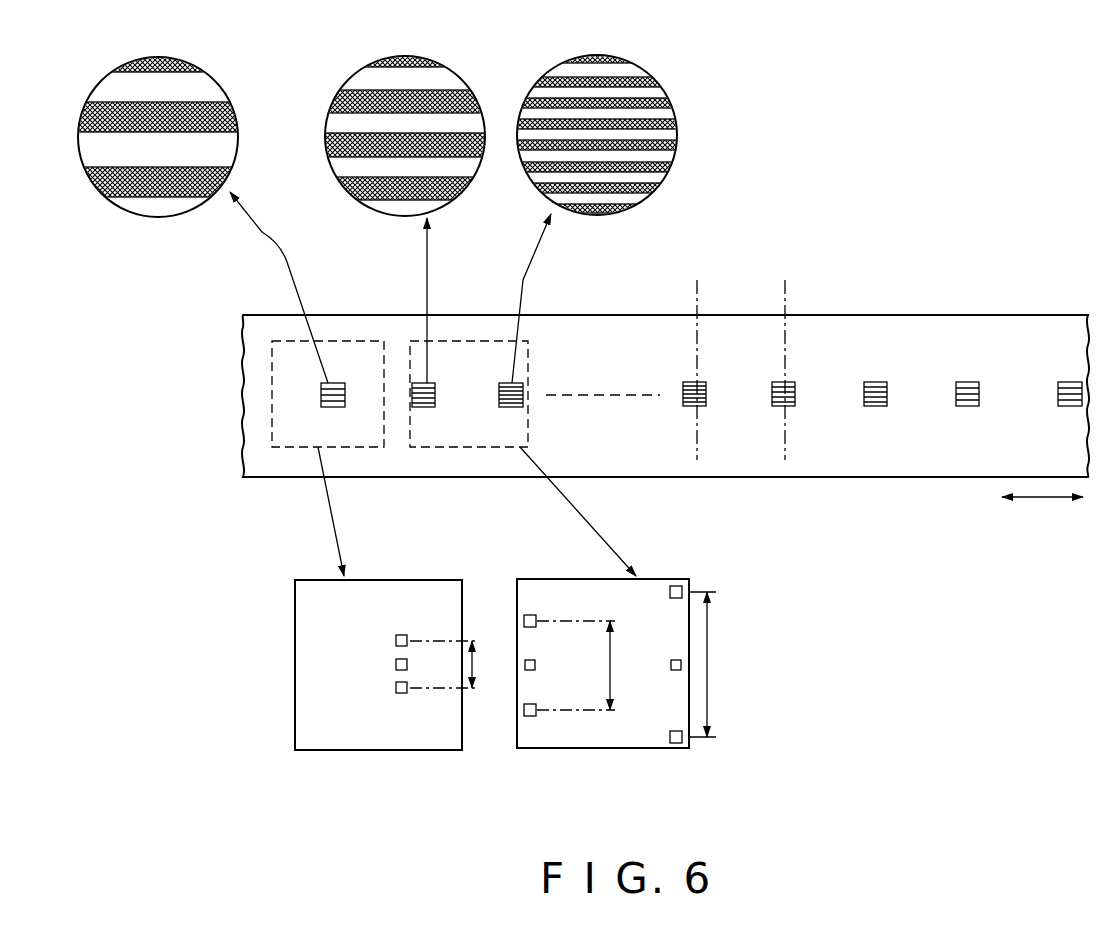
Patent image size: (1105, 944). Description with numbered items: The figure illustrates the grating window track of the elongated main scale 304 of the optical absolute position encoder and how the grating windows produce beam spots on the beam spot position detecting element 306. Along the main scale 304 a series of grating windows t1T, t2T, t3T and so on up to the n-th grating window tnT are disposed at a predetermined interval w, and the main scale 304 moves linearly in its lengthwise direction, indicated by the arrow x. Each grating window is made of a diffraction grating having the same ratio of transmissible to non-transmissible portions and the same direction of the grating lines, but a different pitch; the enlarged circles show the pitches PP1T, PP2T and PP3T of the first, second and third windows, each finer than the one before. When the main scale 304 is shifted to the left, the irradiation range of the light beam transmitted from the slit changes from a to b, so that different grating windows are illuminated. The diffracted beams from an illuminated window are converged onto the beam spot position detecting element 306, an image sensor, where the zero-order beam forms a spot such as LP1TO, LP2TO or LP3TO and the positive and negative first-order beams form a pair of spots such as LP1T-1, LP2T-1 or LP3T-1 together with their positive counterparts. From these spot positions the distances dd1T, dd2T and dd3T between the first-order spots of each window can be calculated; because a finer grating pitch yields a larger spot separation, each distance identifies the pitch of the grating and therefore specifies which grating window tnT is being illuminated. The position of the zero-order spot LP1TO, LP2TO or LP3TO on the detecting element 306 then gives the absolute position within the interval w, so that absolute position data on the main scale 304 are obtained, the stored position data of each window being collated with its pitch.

The main scale 304 is at (955, 305).
The beam spot position detecting element 306 is at (302, 750).
The irradiation range of the light beam a is at (365, 338).
The irradiation range of the light beam b is at (523, 338).
The predetermined interval w is at (785, 290).
The lengthwise direction of the main scale x is at (1045, 498).
The grating window t1T is at (338, 407).
The grating window t2T is at (427, 407).
The grating window t3T is at (513, 407).
The grating window tnT is at (697, 406).
The pitch of the diffraction gratings PP1T is at (270, 132).
The pitch of the diffraction gratings PP2T is at (294, 133).
The pitch of the diffraction gratings PP3T is at (677, 129).
The distance between the beam spots dd1T is at (478, 641).
The distance between the beam spots dd2T is at (576, 665).
The distance between the beam spots dd3T is at (728, 664).
The beam spot of the 0-order diffracted light beam LP1TO is at (396, 665).
The beam spot of the 1-order diffracted light beam LP1T-1 is at (396, 688).
The beam spot of the 0-order diffracted light beam LP2TO is at (535, 660).
The beam spot of the 1-order diffracted light beam LP2T-1 is at (524, 712).
The beam spot of the 0-order diffracted light beam LP3TO is at (677, 659).
The beam spot of the 1-order diffracted light beam LP3T-1 is at (670, 737).